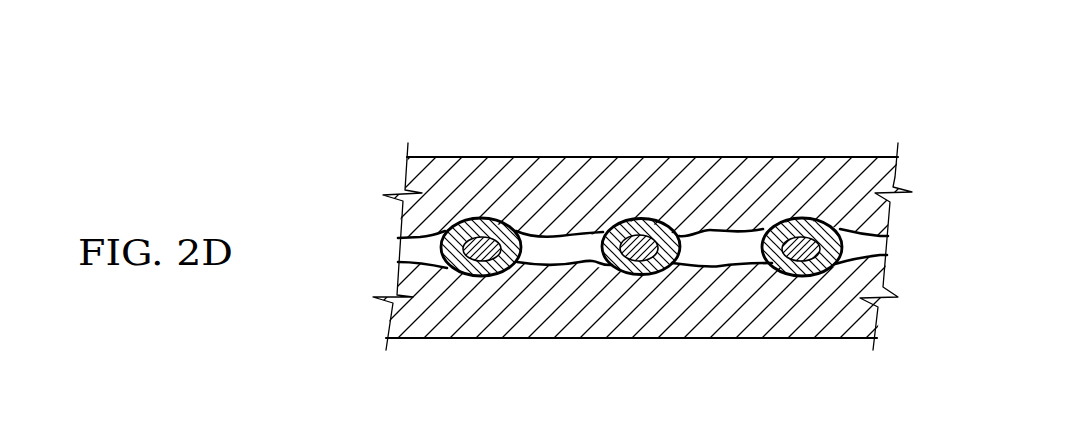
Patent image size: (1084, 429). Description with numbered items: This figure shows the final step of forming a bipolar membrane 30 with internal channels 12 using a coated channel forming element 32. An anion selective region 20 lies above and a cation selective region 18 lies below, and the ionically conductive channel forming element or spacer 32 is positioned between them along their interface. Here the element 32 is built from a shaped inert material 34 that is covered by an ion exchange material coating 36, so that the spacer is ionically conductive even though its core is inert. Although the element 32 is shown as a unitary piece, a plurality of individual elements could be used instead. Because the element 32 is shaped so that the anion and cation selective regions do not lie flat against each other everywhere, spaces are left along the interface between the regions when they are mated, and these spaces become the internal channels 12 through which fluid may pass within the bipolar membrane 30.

The bipolar membrane 30 is at (376, 124).
The anion selective region 20 is at (464, 158).
The cation selective region 18 is at (447, 332).
The channel forming element 32 is at (540, 236).
The shaped inert material 34 is at (468, 215).
The ion exchange material coating 36 is at (443, 253).
The internal channels 12 is at (433, 260).